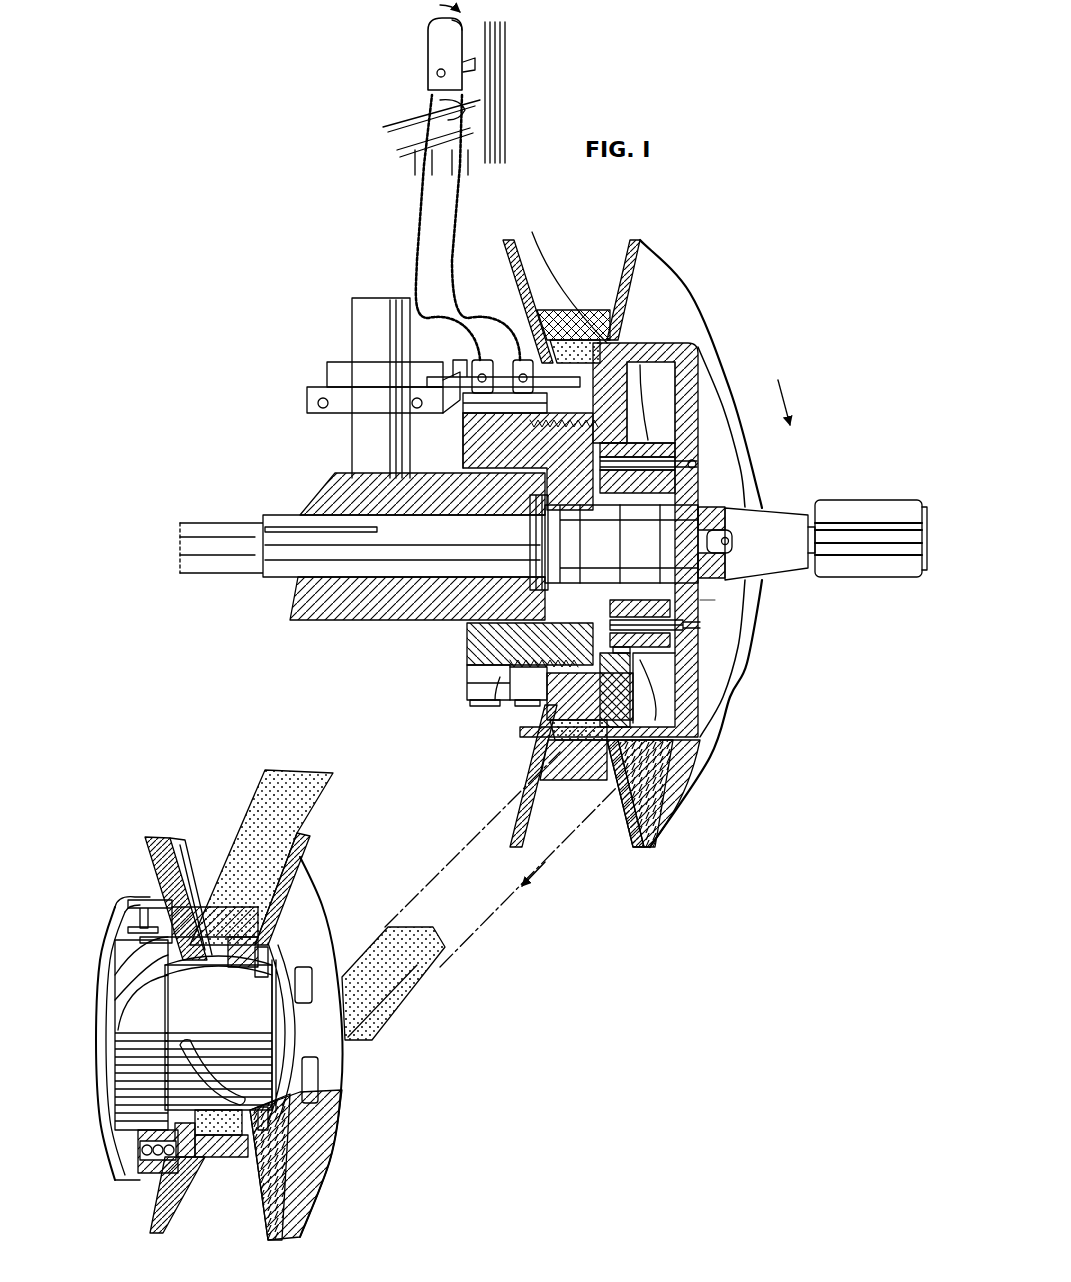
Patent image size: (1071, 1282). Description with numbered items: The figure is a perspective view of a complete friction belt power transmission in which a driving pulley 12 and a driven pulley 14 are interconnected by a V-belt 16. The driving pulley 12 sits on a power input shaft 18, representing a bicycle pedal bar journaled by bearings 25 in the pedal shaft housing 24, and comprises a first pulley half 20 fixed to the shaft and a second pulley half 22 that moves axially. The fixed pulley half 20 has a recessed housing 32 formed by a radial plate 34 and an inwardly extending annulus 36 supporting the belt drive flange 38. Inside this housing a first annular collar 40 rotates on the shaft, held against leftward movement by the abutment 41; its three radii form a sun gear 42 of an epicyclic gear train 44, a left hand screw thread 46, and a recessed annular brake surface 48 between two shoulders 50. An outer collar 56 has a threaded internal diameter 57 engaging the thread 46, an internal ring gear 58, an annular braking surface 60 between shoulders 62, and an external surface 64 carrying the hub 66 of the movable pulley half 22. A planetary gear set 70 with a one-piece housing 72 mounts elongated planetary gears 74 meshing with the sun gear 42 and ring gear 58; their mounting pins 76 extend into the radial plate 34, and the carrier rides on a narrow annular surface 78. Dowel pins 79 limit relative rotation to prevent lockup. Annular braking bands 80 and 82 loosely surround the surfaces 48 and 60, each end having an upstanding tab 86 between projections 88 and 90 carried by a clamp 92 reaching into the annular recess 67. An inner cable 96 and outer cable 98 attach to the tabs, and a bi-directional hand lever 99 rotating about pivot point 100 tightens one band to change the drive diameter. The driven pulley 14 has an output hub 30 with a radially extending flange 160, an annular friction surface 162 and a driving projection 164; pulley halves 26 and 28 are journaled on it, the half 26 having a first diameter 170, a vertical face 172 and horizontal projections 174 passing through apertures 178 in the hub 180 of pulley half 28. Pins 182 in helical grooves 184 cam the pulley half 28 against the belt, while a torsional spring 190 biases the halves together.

The driving pulley 12 is at (716, 272).
The driven pulley 14 is at (385, 1128).
The V-belt 16 is at (433, 950).
The power input shaft 18 is at (420, 552).
The first pulley half 20 is at (640, 240).
The second pulley half 22 is at (548, 253).
The pedal shaft housing 24 is at (335, 622).
The bearings 25 is at (532, 582).
The pulley half 26 is at (165, 840).
The pulley half 28 is at (302, 840).
The hub or output shaft 30 is at (302, 1056).
The recessed housing 32 is at (685, 657).
The radial plate 34 is at (732, 640).
The inwardly extending annulus 36 is at (678, 760).
The belt drive flange 38 is at (662, 312).
The first annular collar 40 is at (556, 580).
The enlarged annular ring or abutment 41 is at (530, 642).
The sun gear 42 is at (660, 590).
The epicyclic gear train 44 is at (655, 412).
The left hand screw thread 46 is at (530, 461).
The recessed annular brake surface 48 is at (466, 686).
The shoulders 50 is at (497, 705).
The outer collar 56 is at (610, 440).
The threaded internal diameter 57 is at (517, 447).
The internal ring gear 58 is at (680, 430).
The annular braking surface 60 is at (505, 672).
The shoulders 62 is at (555, 725).
The external surface 64 is at (654, 374).
The hub 66 is at (605, 437).
The annular recess 67 is at (648, 315).
The planetary gear set 70 is at (700, 488).
The housing 72 is at (680, 450).
The elongated planetary gears 74 is at (636, 585).
The mounting pins 76 is at (682, 470).
The narrow annular surface 78 is at (595, 580).
The dowel pins 79 is at (480, 440).
The annular braking band 80 is at (480, 707).
The annular braking band 82 is at (528, 707).
The upstanding tab 86 is at (484, 358).
The projection 88 is at (453, 362).
The projection 90 is at (482, 418).
The support or clamp 92 is at (335, 370).
The inner cable 96 is at (415, 195).
The outer cable 98 is at (415, 165).
The bi-directional hand lever 99 is at (428, 48).
The pivot point 100 is at (436, 74).
The radially extending flange 160 is at (112, 1068).
The annular friction surface 162 is at (118, 1020).
The driving projection 164 is at (210, 1032).
The first diameter 170 is at (175, 947).
The vertical face 172 is at (155, 965).
The horizontal projections 174 is at (318, 1088).
The apertures 178 is at (292, 1033).
The hub 180 is at (270, 915).
The pins 182 is at (255, 975).
The helical grooves 184 is at (215, 1060).
The torsional spring 190 is at (140, 1152).